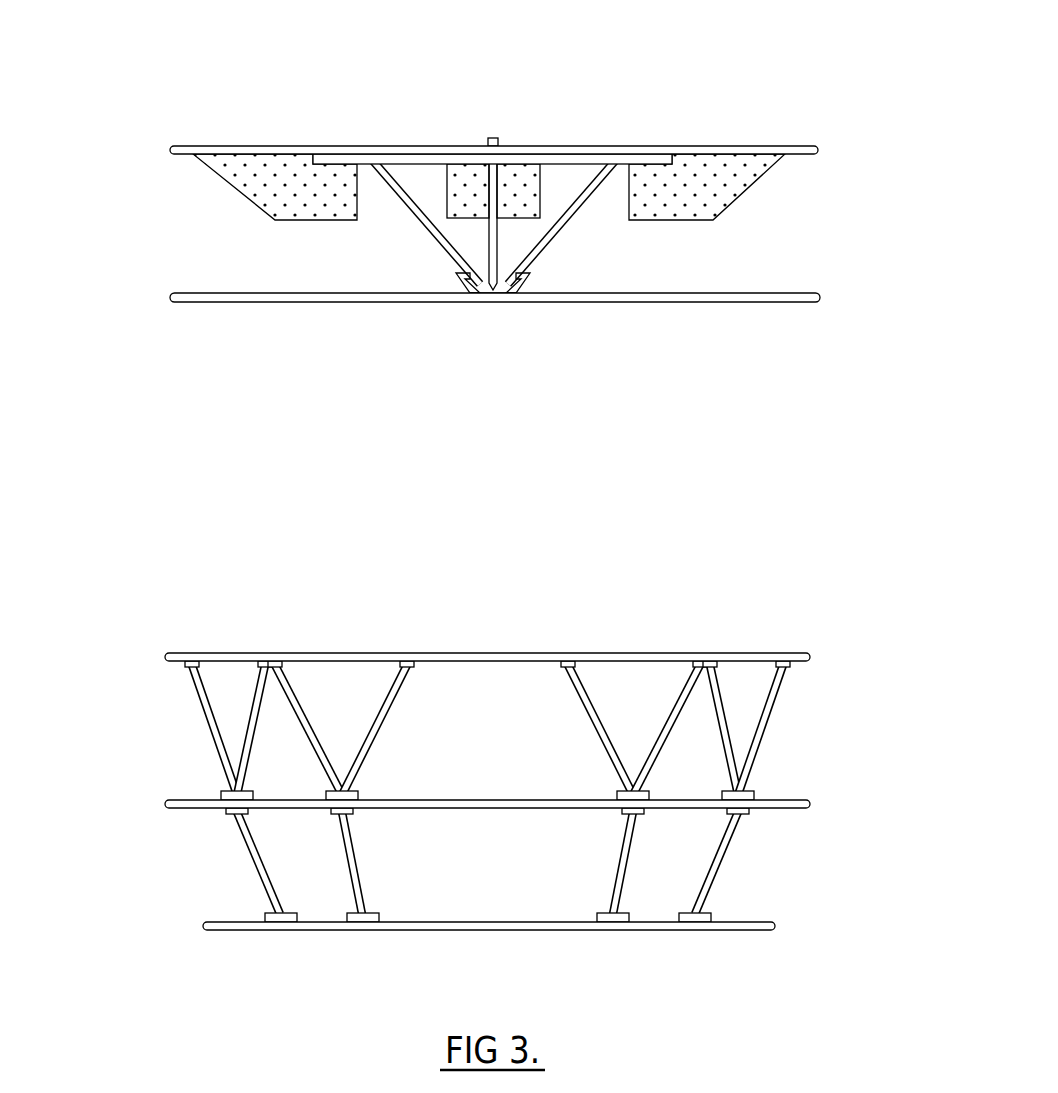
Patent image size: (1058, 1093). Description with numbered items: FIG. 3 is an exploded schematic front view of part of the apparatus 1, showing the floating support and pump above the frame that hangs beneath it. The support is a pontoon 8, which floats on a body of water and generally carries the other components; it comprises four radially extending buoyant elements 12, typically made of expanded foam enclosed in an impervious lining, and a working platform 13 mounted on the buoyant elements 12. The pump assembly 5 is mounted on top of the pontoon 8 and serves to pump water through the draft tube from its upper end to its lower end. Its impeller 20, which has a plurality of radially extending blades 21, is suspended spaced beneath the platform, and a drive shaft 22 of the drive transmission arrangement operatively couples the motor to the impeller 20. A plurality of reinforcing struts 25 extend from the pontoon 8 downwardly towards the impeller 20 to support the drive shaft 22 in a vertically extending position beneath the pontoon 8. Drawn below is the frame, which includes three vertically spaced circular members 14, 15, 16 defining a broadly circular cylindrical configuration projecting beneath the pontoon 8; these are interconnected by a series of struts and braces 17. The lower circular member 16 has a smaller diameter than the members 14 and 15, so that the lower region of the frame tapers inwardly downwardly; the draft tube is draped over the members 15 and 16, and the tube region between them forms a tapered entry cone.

The apparatus 1 is at (258, 102).
The pump assembly 5 is at (487, 165).
The pontoon 8 is at (218, 140).
The buoyant elements 12 is at (250, 173).
The working platform 13 is at (660, 142).
The circular member 14 is at (172, 656).
The circular member 15 is at (222, 803).
The lower circular member 16 is at (201, 926).
The struts and braces 17 is at (725, 712).
The impeller 20 is at (459, 311).
The blades 21 is at (263, 305).
The drive shaft 22 is at (452, 303).
The reinforcing struts 25 is at (433, 237).